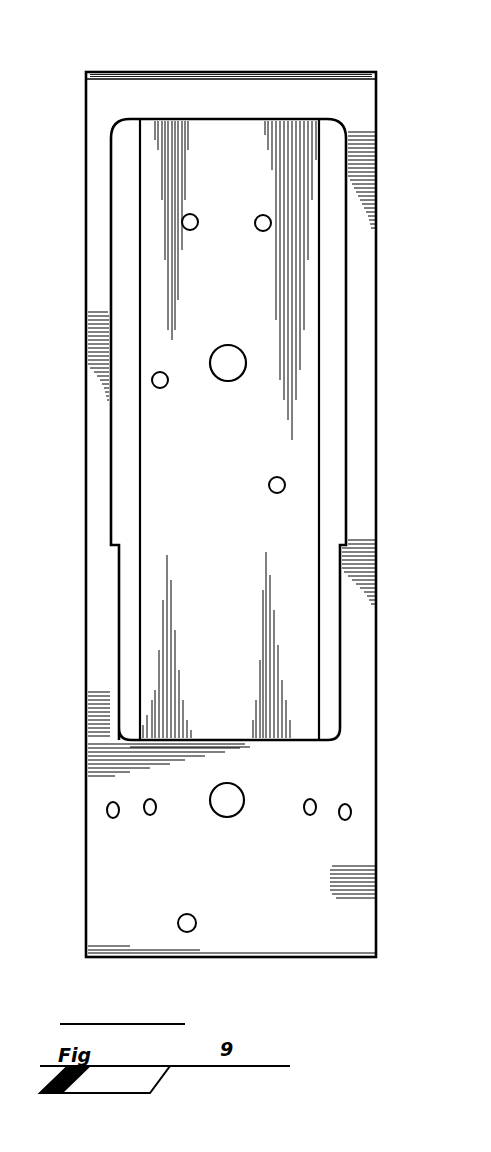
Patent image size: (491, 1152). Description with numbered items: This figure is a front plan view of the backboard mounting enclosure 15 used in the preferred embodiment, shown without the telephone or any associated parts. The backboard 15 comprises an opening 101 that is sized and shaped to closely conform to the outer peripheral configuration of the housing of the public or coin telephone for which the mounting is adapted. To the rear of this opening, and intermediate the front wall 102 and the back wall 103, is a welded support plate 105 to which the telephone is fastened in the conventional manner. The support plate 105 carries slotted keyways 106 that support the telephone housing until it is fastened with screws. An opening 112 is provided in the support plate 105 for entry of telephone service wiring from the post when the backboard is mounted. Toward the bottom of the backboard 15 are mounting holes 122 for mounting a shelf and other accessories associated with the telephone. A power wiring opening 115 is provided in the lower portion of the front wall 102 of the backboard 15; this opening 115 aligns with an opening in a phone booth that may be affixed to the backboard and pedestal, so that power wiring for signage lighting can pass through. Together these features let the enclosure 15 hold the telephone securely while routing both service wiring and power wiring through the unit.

The backboard mounting enclosure 15 is at (376, 108).
The opening 101 is at (344, 388).
The front wall 102 is at (364, 710).
The back wall 103 is at (127, 492).
The support plate 105 is at (220, 135).
The slotted keyways 106 is at (183, 216).
The opening 112 is at (232, 358).
The power wiring opening 115 is at (225, 813).
The mounting holes 122 is at (109, 806).